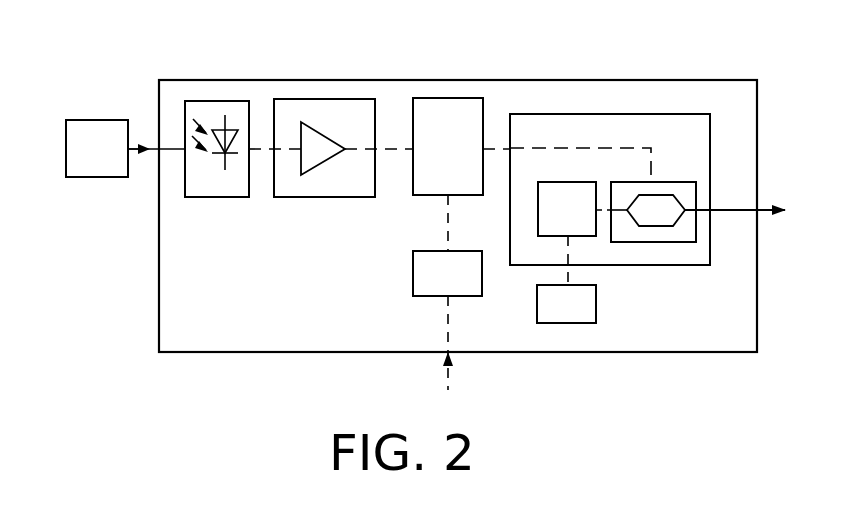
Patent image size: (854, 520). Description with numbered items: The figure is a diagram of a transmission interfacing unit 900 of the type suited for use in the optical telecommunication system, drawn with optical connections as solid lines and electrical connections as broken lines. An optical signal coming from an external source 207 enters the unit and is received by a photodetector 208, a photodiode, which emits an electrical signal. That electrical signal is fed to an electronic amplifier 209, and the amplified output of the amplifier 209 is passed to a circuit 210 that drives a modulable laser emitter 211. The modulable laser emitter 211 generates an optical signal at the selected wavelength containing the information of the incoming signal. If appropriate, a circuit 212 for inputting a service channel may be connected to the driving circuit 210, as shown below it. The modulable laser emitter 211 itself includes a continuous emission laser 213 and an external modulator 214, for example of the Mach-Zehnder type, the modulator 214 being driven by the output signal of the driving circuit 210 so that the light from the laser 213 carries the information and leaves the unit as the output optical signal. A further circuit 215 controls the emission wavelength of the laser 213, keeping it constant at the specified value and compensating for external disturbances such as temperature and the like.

The transmission interfacing unit 900 is at (265, 83).
The external source 207 is at (91, 178).
The photodetector 208 is at (208, 193).
The electronic amplifier 209 is at (306, 193).
The driving circuit 210 is at (447, 105).
The modulable laser emitter 211 is at (663, 120).
The service channel input circuit 212 is at (413, 279).
The continuous emission laser 213 is at (549, 213).
The external modulator 214 is at (692, 192).
The wavelength control circuit 215 is at (592, 313).